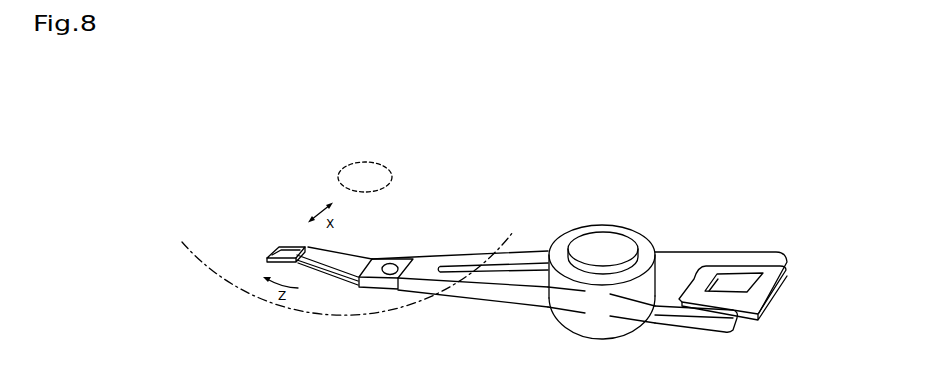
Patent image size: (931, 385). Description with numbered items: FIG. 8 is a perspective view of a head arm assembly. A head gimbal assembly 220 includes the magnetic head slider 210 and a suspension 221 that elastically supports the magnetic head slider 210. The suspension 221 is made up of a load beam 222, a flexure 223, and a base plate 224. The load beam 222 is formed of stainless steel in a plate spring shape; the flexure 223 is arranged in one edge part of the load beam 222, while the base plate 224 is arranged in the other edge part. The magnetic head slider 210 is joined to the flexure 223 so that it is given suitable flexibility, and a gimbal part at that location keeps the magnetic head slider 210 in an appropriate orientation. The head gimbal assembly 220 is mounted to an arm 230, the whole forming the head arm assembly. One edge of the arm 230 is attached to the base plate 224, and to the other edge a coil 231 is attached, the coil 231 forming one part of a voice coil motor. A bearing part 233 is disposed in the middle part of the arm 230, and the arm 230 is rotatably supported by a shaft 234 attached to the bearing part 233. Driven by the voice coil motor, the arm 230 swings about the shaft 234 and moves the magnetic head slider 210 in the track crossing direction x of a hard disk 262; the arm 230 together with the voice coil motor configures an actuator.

The magnetic head slider 210 is at (283, 246).
The head gimbal assembly 220 is at (352, 289).
The suspension 221 is at (352, 226).
The load beam 222 is at (369, 258).
The flexure 223 is at (266, 255).
The base plate 224 is at (413, 259).
The arm 230 is at (463, 296).
The coil 231 is at (773, 301).
The bearing part 233 is at (561, 239).
The shaft 234 is at (610, 240).
The hard disk 262 is at (298, 312).